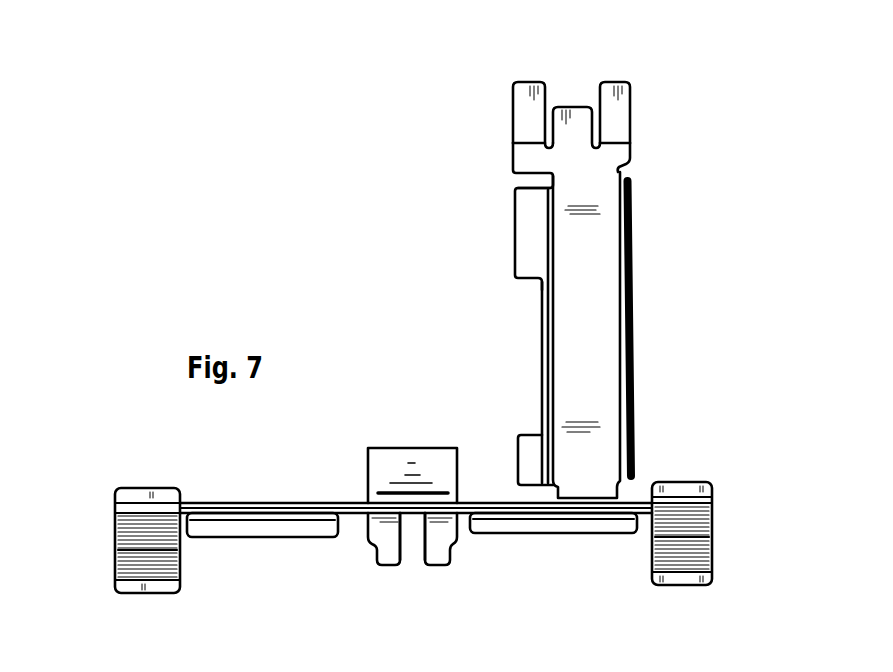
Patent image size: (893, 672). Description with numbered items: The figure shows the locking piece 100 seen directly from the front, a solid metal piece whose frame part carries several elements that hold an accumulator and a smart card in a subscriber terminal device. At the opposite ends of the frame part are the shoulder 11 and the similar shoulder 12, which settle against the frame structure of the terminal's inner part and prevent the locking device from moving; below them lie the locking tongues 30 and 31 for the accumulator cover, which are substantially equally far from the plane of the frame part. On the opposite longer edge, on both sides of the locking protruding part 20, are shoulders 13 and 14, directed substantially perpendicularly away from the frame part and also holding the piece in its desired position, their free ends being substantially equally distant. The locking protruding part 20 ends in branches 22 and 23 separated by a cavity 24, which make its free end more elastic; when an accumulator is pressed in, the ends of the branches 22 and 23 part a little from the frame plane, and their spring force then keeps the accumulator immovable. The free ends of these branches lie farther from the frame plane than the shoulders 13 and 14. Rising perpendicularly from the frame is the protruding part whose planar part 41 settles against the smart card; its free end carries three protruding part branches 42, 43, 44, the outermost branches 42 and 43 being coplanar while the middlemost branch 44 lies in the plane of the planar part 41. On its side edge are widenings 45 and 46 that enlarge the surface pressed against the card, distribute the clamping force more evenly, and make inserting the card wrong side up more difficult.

The locking piece 100 is at (272, 284).
The shoulder 11 is at (132, 495).
The shoulder 12 is at (705, 482).
The shoulder 13 is at (266, 529).
The shoulder 14 is at (561, 531).
The locking protruding part 20 is at (412, 458).
The branch 22 is at (390, 566).
The branch 23 is at (450, 566).
The cavity 24 is at (417, 565).
The locking tongue 30 is at (712, 556).
The locking tongue 31 is at (115, 580).
The planar part 41 is at (604, 293).
The protruding part branch 42 is at (512, 83).
The protruding part branch 43 is at (618, 80).
The protruding part branch 44 is at (557, 106).
The widening 45 is at (517, 228).
The widening 46 is at (519, 438).